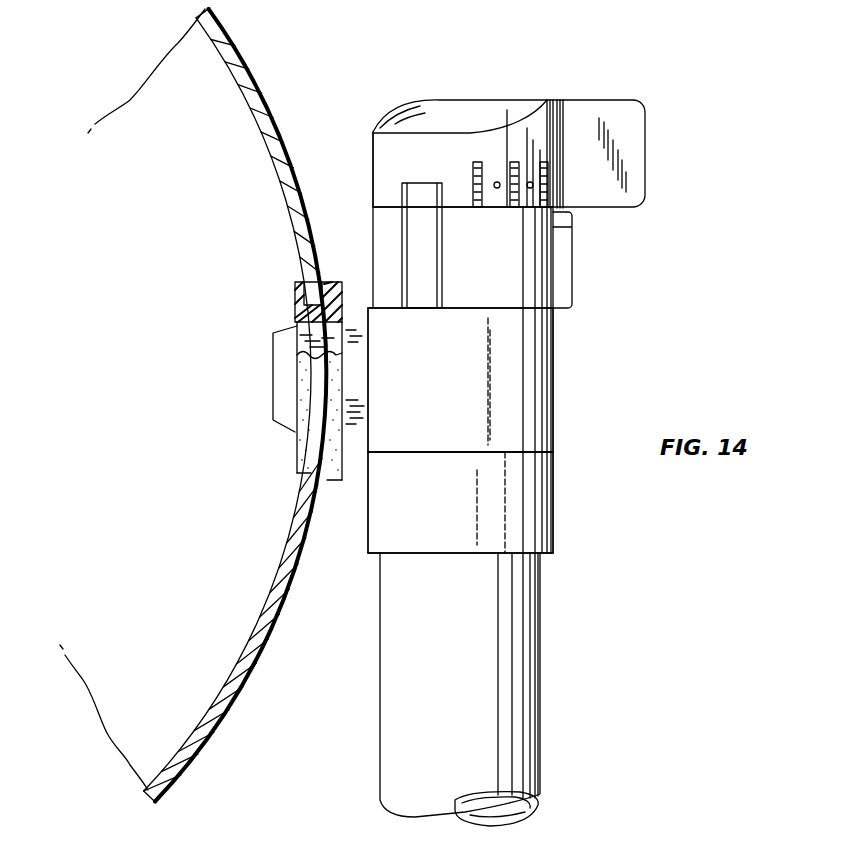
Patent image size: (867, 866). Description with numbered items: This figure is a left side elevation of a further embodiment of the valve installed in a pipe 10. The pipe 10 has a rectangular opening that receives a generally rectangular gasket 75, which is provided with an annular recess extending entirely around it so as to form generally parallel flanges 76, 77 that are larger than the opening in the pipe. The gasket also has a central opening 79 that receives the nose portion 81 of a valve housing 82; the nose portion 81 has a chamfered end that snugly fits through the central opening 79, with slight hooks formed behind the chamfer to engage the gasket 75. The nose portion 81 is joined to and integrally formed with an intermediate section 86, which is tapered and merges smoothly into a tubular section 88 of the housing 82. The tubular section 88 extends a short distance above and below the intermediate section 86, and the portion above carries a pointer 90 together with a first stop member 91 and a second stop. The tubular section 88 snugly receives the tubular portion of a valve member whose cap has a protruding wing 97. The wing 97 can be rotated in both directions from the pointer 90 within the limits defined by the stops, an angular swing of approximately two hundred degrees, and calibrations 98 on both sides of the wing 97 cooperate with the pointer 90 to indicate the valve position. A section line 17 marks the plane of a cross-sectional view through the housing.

The pipe 10 is at (250, 68).
The section line 17- 17 is at (170, 408).
The gasket 75 is at (292, 474).
The flange 76 is at (299, 284).
The flange 77 is at (333, 281).
The central opening 79 is at (300, 330).
The nose portion 81 is at (273, 428).
The valve housing 82 is at (560, 496).
The intermediate section 86 is at (428, 397).
The tubular section 88 is at (368, 518).
The pointer 90 is at (573, 256).
The first stop member 91 is at (460, 252).
The wing 97 is at (613, 100).
The calibrations 98 is at (514, 162).